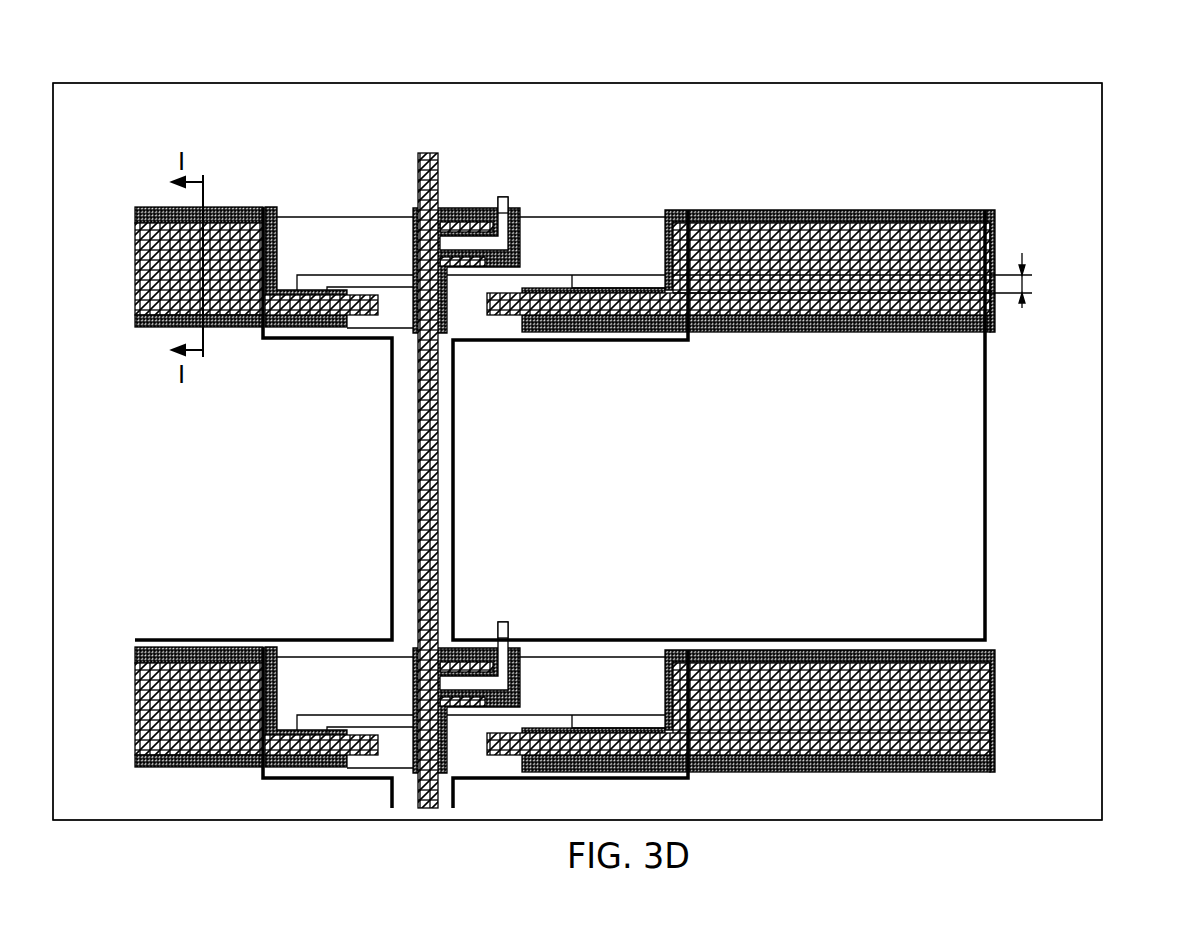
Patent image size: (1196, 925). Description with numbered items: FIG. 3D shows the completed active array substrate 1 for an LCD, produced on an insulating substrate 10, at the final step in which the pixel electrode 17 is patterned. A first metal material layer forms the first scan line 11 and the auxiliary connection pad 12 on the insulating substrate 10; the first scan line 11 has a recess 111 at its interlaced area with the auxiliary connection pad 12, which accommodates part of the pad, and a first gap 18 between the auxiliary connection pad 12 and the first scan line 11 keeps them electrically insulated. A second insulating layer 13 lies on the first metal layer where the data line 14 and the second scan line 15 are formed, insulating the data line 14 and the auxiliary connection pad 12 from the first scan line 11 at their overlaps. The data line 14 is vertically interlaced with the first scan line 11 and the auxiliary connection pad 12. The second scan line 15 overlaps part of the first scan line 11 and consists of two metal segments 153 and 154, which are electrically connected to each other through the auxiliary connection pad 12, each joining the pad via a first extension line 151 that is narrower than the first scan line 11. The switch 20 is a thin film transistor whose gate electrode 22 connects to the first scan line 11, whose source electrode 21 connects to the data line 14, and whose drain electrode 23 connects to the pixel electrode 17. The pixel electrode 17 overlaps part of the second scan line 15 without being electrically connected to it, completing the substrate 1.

The active array substrate 1 is at (1134, 88).
The insulating substrate 10 is at (1104, 121).
The first scan line 11 is at (628, 228).
The recess 111 is at (553, 275).
The auxiliary connection pad 12 is at (392, 293).
The second insulating layer 13 is at (148, 328).
The data line 14 is at (432, 153).
The second scan line 15 is at (146, 276).
The first extension line 151 is at (312, 297).
The metal segment 153 is at (248, 222).
The metal segment 154 is at (762, 222).
The pixel electrode 17 is at (276, 430).
The first gap 18 is at (1025, 280).
The switch 20 is at (543, 128).
The source electrode 21 is at (455, 224).
The gate electrode 22 is at (486, 238).
The drain electrode 23 is at (508, 200).